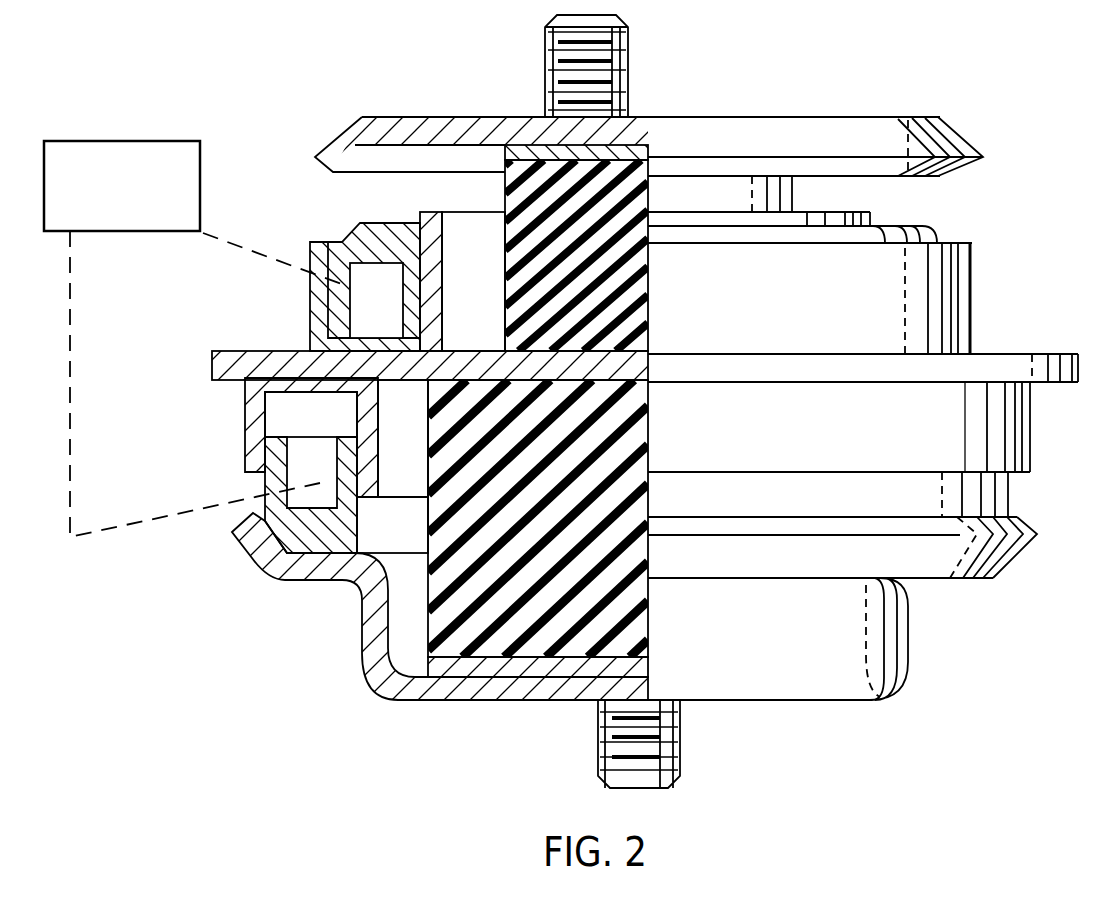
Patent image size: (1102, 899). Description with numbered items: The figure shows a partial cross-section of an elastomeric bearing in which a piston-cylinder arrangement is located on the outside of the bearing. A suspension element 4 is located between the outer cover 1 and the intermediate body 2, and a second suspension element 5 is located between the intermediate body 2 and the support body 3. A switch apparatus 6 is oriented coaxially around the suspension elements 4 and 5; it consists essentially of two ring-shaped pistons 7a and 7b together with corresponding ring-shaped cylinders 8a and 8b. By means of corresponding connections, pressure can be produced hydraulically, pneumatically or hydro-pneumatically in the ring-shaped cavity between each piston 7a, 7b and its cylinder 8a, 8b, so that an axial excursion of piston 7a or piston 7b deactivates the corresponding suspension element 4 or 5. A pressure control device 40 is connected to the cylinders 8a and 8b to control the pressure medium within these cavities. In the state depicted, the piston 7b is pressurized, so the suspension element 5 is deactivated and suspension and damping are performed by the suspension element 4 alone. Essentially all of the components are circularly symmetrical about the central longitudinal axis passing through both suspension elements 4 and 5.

The outer cover 1 is at (850, 142).
The intermediate body 2 is at (992, 368).
The support body 3 is at (878, 700).
The suspension element 4 is at (533, 180).
The second suspension element 5 is at (548, 635).
The switch apparatus 6 is at (196, 408).
The ring-shaped piston 7a is at (378, 245).
The ring-shaped piston 7b is at (340, 533).
The ring-shaped cylinder 8a is at (318, 300).
The ring-shaped cylinder 8b is at (253, 447).
The pressure control device 40 is at (130, 122).